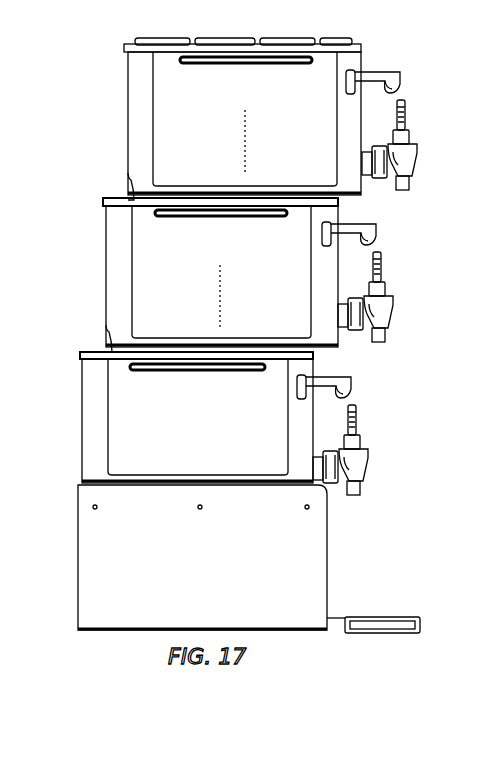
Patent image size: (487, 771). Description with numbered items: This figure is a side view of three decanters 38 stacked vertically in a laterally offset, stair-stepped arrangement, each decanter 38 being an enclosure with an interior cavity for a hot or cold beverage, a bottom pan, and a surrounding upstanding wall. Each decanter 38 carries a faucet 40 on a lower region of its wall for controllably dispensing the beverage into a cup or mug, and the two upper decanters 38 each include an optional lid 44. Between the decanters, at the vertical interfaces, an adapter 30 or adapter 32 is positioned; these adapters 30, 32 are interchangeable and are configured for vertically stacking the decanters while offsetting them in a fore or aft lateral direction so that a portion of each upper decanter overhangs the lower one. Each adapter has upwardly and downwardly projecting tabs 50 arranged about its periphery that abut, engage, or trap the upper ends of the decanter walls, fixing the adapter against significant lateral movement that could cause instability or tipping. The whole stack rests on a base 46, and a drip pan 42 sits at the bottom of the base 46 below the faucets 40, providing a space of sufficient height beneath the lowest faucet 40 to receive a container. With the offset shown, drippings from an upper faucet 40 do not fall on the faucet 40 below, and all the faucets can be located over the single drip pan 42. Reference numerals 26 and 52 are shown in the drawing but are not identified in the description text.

The reservoir level indicator 26 is at (250, 143).
The first adapter 30 is at (244, 263).
The second adapter 32 is at (207, 263).
The decanter 38 is at (128, 121).
The faucet 40 is at (353, 282).
The drip pan 42 is at (405, 616).
The lid 44 is at (332, 36).
The base 46 is at (329, 553).
The tab 50 is at (127, 180).
The spout 52 is at (322, 396).